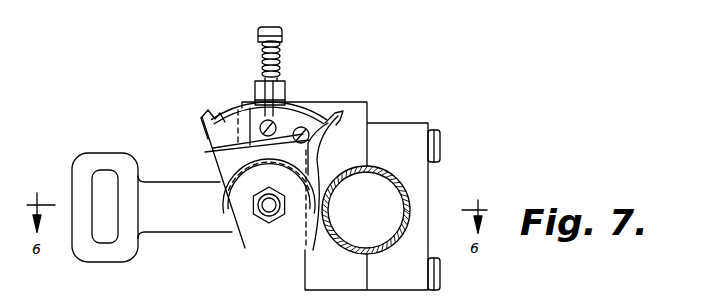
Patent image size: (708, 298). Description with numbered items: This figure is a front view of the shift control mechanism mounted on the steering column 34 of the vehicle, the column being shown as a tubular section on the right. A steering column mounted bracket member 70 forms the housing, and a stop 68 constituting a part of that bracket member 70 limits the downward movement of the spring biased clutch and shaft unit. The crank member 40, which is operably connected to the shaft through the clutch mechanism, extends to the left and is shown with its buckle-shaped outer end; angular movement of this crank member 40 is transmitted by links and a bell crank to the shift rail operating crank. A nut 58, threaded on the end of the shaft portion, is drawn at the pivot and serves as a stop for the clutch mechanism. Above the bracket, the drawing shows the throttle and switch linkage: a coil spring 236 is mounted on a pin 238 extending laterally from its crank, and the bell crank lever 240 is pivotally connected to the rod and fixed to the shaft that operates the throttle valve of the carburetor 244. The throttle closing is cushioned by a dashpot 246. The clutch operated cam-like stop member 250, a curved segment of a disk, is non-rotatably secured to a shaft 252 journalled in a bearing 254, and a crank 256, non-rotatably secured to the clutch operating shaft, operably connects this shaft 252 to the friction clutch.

The steering column 34 is at (405, 188).
The crank member 40 is at (200, 228).
The nut 58 is at (265, 216).
The stop 68 is at (298, 251).
The bracket member 70 is at (408, 132).
The coil spring 236 is at (281, 50).
The pin 238 is at (260, 83).
The bell crank lever 240 is at (275, 101).
The carburetor 244 is at (230, 115).
The dashpot 246 is at (205, 134).
The cam-like stop member 250 is at (315, 120).
The shaft 252 is at (213, 150).
The bearing 254 is at (201, 116).
The crank 256 is at (372, 112).